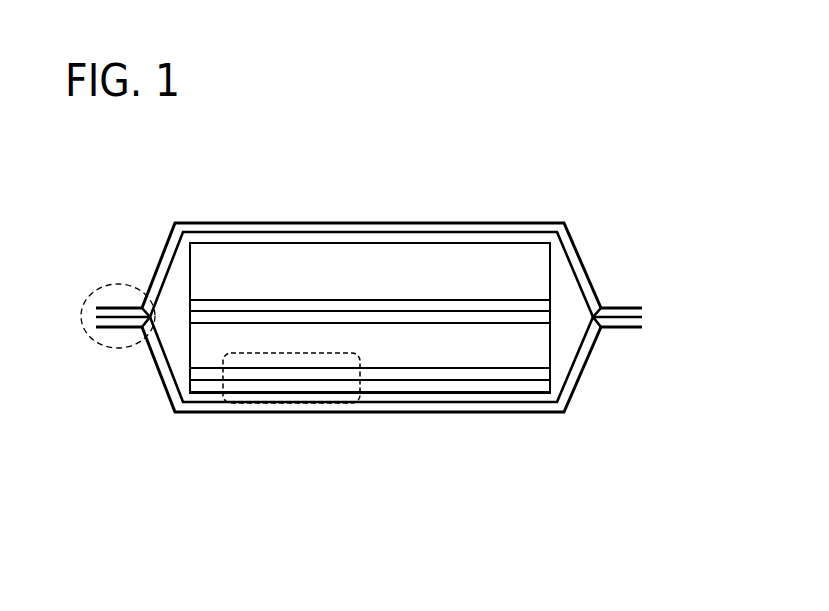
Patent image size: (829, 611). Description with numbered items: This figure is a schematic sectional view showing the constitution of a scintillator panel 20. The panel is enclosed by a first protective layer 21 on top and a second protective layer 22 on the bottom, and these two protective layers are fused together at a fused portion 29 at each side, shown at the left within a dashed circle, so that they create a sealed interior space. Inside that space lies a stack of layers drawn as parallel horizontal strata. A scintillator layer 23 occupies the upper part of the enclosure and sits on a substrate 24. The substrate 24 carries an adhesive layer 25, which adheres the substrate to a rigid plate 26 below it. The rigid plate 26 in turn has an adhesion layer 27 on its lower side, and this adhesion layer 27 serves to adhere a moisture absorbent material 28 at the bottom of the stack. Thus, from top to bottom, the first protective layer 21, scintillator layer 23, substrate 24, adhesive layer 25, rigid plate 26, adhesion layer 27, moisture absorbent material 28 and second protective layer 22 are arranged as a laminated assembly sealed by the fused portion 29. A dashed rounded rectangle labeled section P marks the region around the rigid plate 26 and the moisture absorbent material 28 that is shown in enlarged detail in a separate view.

The scintillator panel 20 is at (247, 213).
The first protective layer 21 is at (462, 232).
The second protective layer 22 is at (400, 415).
The scintillator layer 23 is at (543, 272).
The substrate 24 is at (543, 306).
The adhesive layer 25 is at (543, 318).
The rigid plate 26 is at (543, 343).
The adhesion layer 27 is at (543, 373).
The moisture absorbent material 28 is at (543, 385).
The fused portion 29 is at (115, 349).
The section P is at (350, 353).